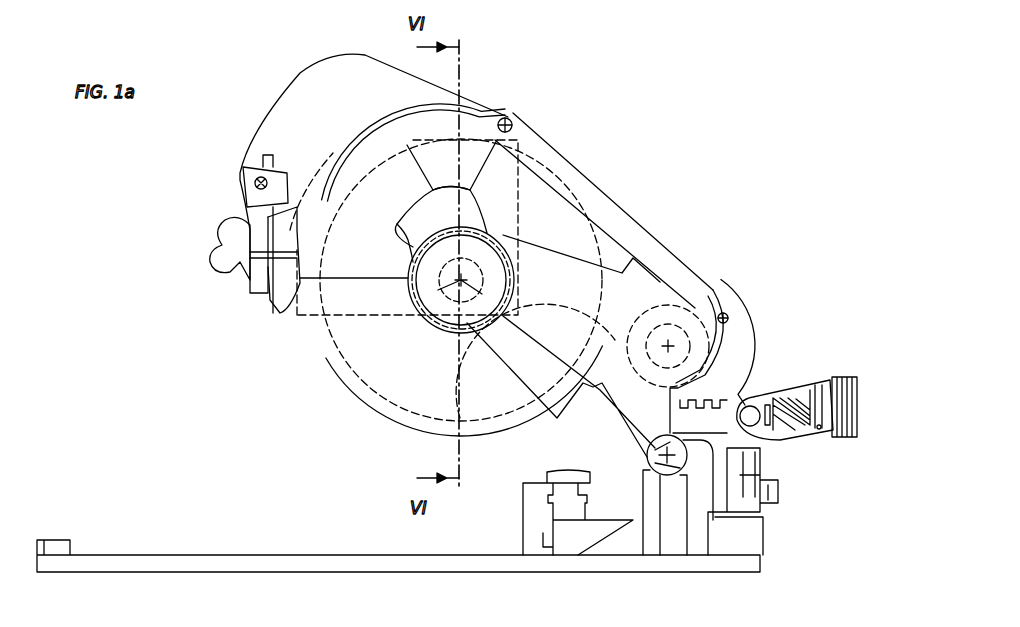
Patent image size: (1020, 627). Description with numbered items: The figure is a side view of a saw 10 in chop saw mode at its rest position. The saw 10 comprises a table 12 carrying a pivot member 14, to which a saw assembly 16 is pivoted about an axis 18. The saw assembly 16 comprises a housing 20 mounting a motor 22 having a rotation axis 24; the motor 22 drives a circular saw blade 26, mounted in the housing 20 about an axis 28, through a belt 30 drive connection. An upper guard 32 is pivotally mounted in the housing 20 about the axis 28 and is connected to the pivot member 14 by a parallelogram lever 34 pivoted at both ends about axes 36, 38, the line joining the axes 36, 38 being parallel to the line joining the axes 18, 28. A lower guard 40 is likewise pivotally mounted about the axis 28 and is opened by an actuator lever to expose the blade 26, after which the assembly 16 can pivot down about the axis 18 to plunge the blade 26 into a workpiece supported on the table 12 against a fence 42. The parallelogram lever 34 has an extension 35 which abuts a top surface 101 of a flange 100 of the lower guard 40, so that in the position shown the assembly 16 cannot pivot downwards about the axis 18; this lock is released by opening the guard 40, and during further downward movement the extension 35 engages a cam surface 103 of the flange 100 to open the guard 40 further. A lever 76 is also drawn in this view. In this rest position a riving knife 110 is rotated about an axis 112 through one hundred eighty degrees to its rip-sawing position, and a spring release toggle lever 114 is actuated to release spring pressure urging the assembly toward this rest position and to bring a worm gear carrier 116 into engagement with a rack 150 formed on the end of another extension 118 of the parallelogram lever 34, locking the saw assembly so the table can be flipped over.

The saw 10 is at (193, 413).
The table 12 is at (190, 555).
The pivot member 14 is at (715, 465).
The saw assembly 16 is at (701, 256).
The axis 18 is at (660, 458).
The housing 20 is at (633, 263).
The motor 22 is at (720, 295).
The rotation axis 24 is at (668, 346).
The circular saw blade 26 is at (522, 387).
The axis 28 is at (415, 298).
The belt 30 is at (548, 309).
The upper guard 32 is at (285, 303).
The parallelogram lever 34 is at (577, 183).
The extension 35 is at (437, 155).
The axis 36 is at (515, 113).
The axis 38 is at (729, 316).
The lower guard 40 is at (368, 367).
The fence 42 is at (523, 522).
The lever 76 is at (562, 400).
The flange 100 is at (403, 227).
The top surface 101 is at (412, 207).
The cam surface 103 is at (413, 247).
The riving knife 110 is at (295, 127).
The axis 112 is at (228, 248).
The spring release toggle lever 114 is at (815, 392).
The worm gear carrier 116 is at (819, 430).
The extension 118 is at (738, 364).
The rack 150 is at (698, 408).